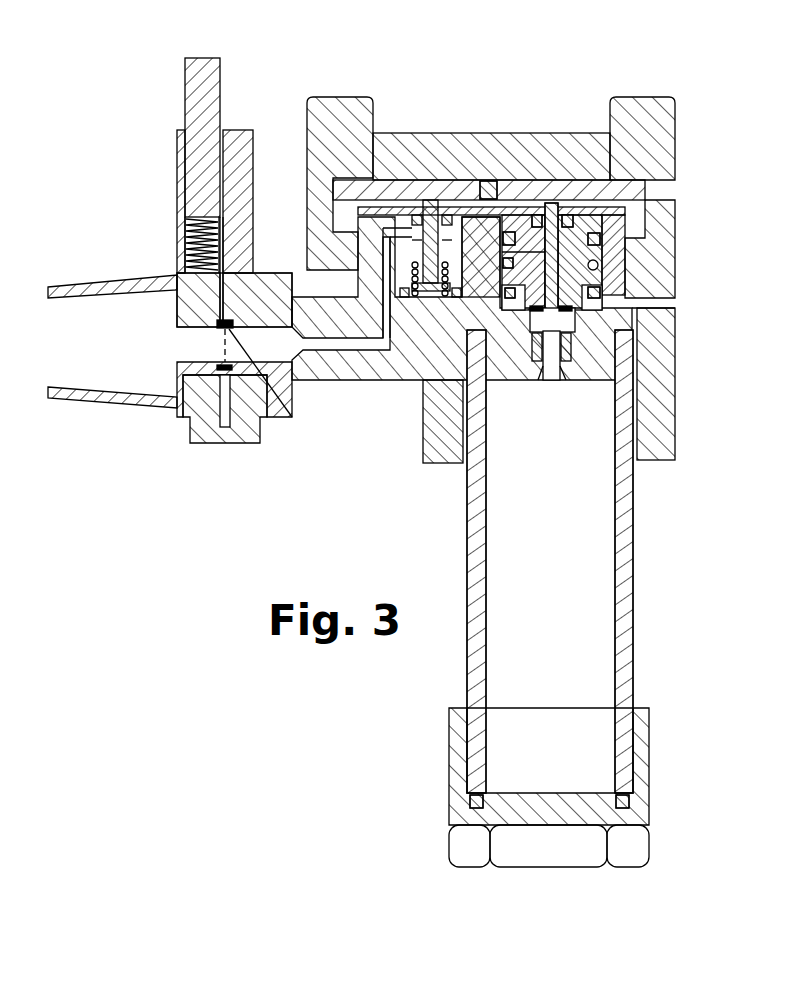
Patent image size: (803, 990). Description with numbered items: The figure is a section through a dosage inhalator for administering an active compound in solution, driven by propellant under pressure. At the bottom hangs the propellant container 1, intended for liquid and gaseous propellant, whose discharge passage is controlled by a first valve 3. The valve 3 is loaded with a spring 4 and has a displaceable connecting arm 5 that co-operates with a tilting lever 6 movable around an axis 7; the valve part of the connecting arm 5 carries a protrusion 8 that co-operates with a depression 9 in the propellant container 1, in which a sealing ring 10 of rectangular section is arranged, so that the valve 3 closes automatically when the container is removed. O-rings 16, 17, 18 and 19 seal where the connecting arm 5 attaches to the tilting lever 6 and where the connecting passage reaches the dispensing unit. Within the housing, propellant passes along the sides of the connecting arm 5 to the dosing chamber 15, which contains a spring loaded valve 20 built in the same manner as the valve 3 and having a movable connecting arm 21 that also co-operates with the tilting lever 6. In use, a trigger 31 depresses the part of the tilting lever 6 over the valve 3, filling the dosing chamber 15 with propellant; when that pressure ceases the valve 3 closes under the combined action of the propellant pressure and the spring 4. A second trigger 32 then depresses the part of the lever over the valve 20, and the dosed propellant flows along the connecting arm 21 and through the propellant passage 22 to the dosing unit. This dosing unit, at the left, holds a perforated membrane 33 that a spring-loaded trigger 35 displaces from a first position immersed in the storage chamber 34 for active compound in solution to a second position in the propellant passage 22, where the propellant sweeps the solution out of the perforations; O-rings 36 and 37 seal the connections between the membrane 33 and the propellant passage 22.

The propellant container 1 is at (630, 522).
The first valve 3 is at (572, 332).
The spring 4 is at (543, 350).
The connecting arm 5 is at (522, 207).
The tilting lever 6 is at (637, 181).
The axis 7 is at (490, 180).
The protrusion 8 is at (573, 340).
The depression 9 is at (675, 308).
The sealing ring 10 is at (545, 382).
The dosing chamber 15 is at (430, 290).
The O-ring 16 is at (568, 215).
The O-ring 17 is at (627, 217).
The O-ring 18 is at (620, 247).
The O-ring 19 is at (603, 290).
The spring loaded valve 20 is at (405, 262).
The movable connecting arm 21 is at (433, 200).
The propellant passage 22 is at (350, 372).
The trigger 31 is at (648, 97).
The trigger 32 is at (331, 97).
The perforated membrane 33 is at (217, 288).
The storage chamber 34 is at (225, 428).
The spring-loaded trigger 35 is at (206, 57).
The O-ring 36 is at (219, 328).
The O-ring 37 is at (292, 417).